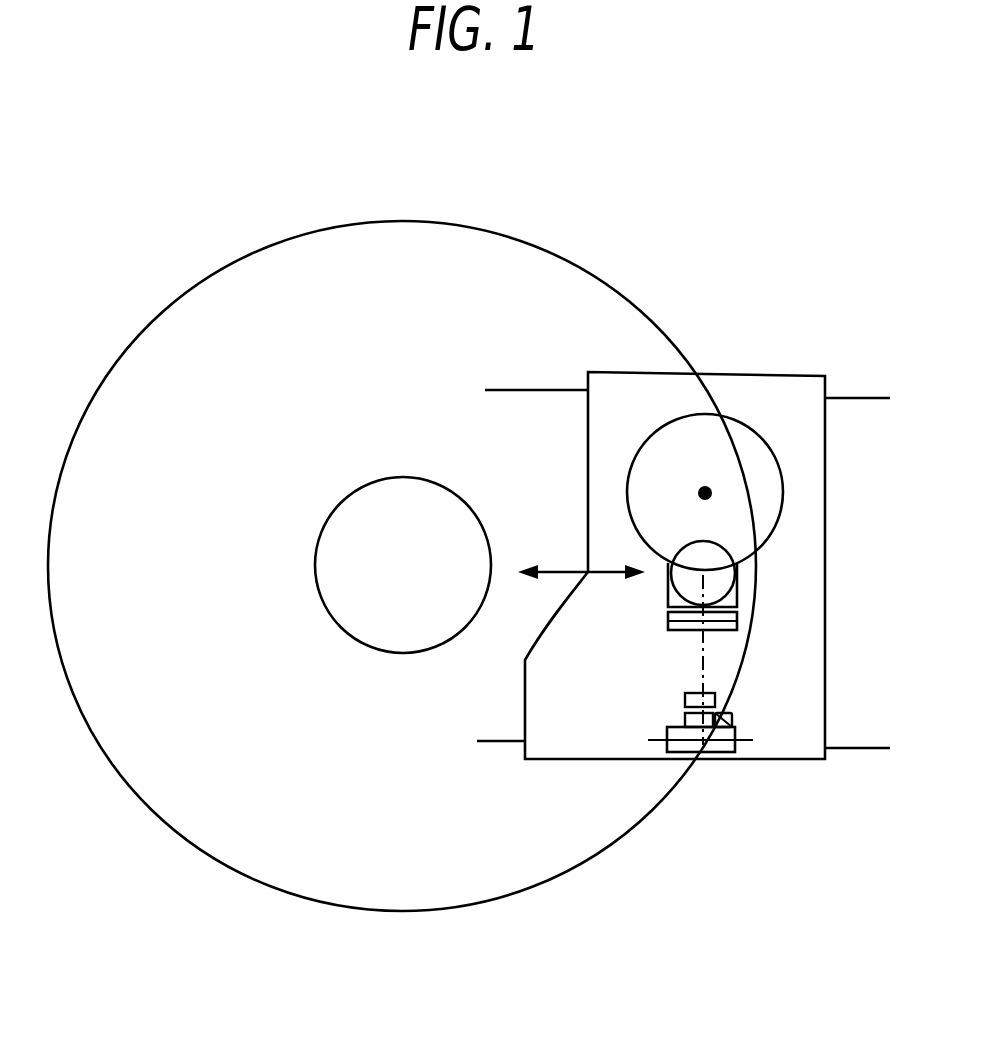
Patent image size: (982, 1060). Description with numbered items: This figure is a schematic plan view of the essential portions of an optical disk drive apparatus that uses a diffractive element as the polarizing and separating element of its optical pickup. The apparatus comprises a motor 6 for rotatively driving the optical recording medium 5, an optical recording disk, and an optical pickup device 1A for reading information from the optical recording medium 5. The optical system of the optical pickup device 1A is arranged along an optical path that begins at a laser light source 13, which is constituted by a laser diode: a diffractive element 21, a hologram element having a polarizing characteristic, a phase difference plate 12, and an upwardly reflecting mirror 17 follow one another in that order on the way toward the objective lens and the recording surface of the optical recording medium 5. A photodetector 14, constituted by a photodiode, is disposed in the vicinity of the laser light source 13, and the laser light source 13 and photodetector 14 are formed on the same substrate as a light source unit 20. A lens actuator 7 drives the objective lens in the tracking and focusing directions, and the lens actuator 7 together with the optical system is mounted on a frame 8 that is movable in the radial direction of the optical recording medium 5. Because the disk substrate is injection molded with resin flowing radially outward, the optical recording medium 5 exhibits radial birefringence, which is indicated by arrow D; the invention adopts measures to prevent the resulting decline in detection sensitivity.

The optical pickup device 1A is at (183, 190).
The optical recording medium 5 is at (152, 318).
The motor 6 is at (322, 525).
The lens actuator 7 is at (742, 452).
The frame 8 is at (803, 393).
The upwardly reflecting mirror 17 is at (737, 600).
The phase difference plate 12 is at (737, 624).
The laser light source 13 is at (700, 735).
The diffractive element 21 is at (720, 700).
The light source unit 20 is at (737, 752).
The photodetector 14 is at (737, 723).
The arrow D is at (568, 573).